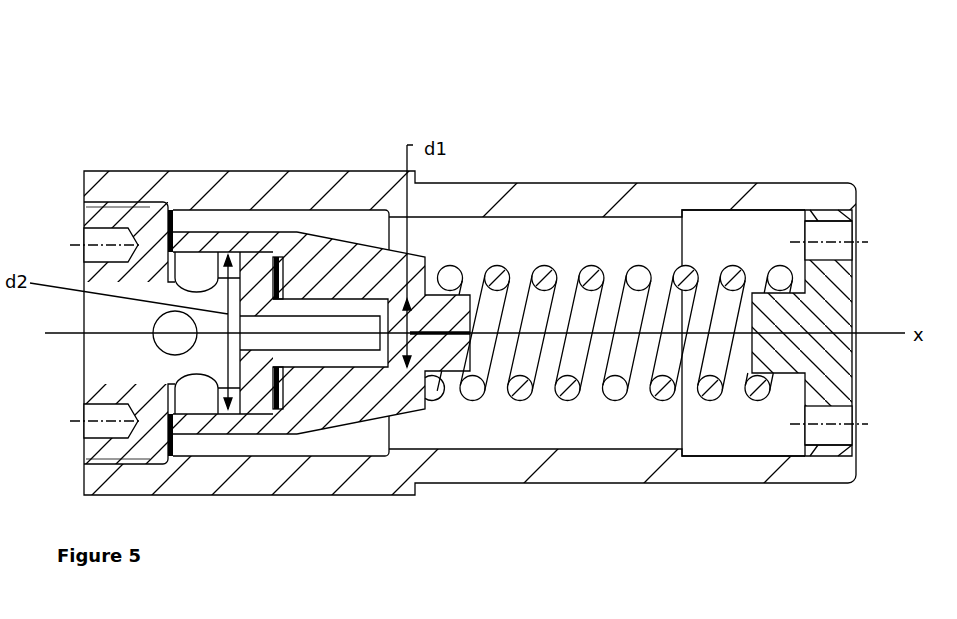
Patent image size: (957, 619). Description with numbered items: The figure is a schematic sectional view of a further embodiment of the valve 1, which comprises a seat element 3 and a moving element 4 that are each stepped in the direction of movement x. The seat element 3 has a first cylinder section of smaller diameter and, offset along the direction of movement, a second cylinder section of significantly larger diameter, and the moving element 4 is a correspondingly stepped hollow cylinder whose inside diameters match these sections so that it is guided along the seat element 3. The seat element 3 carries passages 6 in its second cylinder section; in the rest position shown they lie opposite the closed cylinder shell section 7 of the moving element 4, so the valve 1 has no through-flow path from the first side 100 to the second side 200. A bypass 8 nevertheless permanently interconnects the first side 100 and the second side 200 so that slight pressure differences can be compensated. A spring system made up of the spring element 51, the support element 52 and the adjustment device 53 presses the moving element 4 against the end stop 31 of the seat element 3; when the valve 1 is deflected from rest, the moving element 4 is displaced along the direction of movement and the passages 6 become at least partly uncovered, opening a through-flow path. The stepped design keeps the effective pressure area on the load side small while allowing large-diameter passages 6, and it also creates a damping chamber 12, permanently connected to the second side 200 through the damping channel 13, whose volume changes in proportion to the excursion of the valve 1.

The valve 1 is at (725, 100).
The seat element 3 is at (154, 220).
The end stop 31 is at (178, 250).
The moving element 4 is at (347, 410).
The passages 6 is at (196, 263).
The closed cylinder shell section 7 is at (226, 386).
The bypass 8 is at (462, 270).
The damping chamber 12 is at (288, 229).
The damping channel 13 is at (318, 212).
The spring element 51 is at (661, 400).
The support element 52 is at (835, 399).
The adjustment device 53 is at (824, 452).
The first side 100 is at (81, 310).
The second side 200 is at (851, 317).